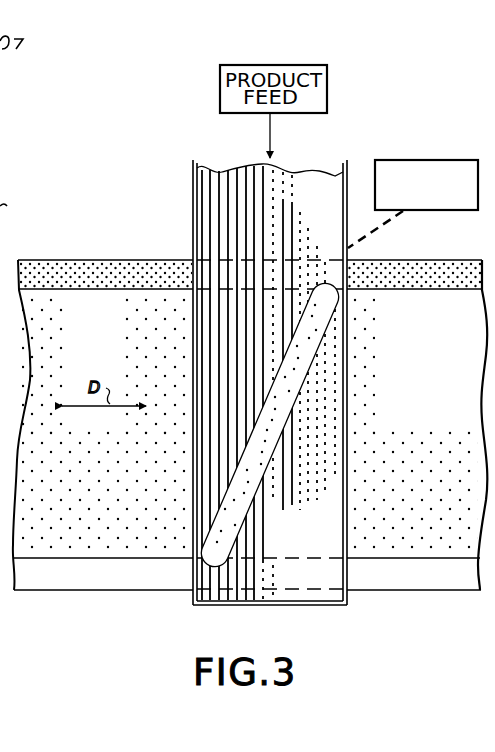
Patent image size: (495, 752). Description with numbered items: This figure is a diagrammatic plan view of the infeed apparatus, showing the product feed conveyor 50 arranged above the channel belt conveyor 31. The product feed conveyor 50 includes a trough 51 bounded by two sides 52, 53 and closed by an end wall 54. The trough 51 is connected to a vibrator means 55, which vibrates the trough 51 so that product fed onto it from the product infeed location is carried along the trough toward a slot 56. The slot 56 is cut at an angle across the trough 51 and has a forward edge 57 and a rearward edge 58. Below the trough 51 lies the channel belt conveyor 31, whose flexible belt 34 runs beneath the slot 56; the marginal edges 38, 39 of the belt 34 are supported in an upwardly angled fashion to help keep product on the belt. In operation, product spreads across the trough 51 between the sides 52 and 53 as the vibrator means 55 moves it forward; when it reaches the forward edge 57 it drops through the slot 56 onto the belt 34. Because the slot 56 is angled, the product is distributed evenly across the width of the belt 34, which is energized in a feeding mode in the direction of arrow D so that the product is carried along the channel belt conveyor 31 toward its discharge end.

The channel belt conveyor 31 is at (125, 257).
The flexible belt 34 is at (68, 447).
The marginal edge of the belt 38 is at (128, 590).
The marginal edge of the belt 39 is at (166, 268).
The product feed conveyor 50 is at (297, 388).
The trough 51 is at (322, 166).
The side of trough 52 is at (197, 357).
The side of trough 53 is at (349, 449).
The end wall 54 is at (298, 606).
The vibrator means 55 is at (427, 160).
The slot 56 is at (276, 426).
The forward edge of slot 57 is at (256, 456).
The rearward edge of slot 58 is at (286, 413).